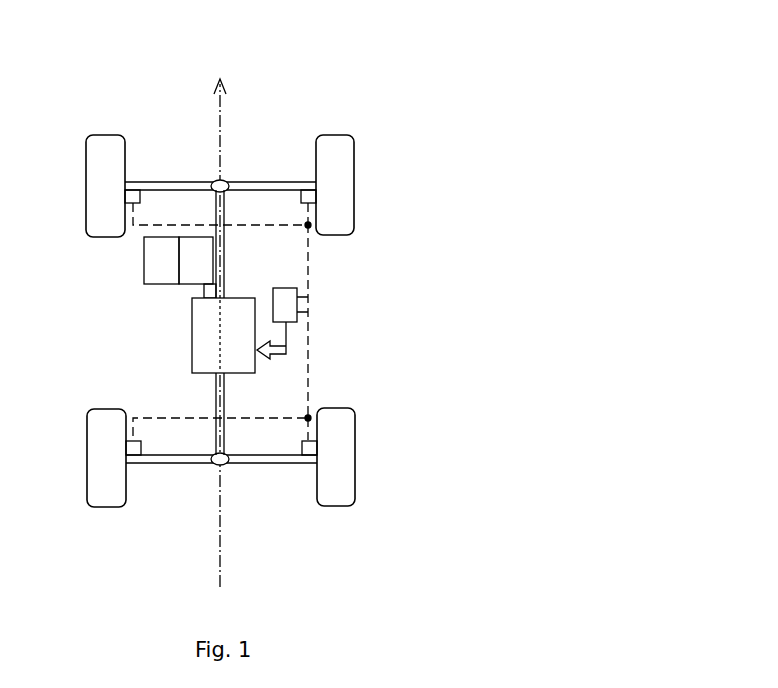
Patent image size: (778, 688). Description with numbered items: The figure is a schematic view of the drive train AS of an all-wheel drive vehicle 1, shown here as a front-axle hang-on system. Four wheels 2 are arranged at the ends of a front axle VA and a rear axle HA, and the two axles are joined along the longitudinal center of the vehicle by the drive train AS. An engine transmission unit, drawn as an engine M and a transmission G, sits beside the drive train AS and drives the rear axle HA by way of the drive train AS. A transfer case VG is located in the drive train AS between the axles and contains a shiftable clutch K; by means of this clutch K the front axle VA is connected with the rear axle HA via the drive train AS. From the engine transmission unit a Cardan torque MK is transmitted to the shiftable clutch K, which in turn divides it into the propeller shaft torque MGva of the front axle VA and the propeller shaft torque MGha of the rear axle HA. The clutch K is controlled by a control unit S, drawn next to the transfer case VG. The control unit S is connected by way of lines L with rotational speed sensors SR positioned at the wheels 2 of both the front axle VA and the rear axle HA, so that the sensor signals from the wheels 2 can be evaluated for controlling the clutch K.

The all-wheel drive vehicle 1 is at (362, 88).
The wheels 2 is at (103, 135).
The drive train AS is at (188, 148).
The front axle VA is at (235, 168).
The rear axle HA is at (240, 467).
The rotational speed sensors SR is at (127, 205).
The lines L is at (308, 240).
The engine transmission unit (engine part) M is at (161, 260).
The engine transmission unit (transmission part) G is at (197, 267).
The transfer case VG is at (223, 335).
The shiftable clutch K is at (221, 353).
The control unit S is at (282, 323).
The propeller shaft torque of the front axle MGva is at (227, 242).
The propeller shaft torque of the rear axle MGha is at (227, 393).
The Cardan torque MK is at (203, 292).